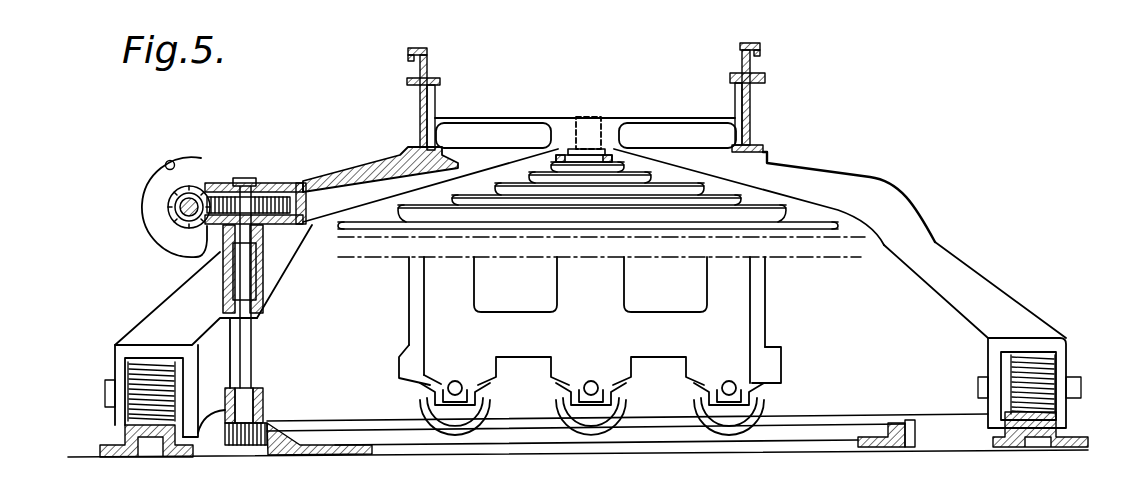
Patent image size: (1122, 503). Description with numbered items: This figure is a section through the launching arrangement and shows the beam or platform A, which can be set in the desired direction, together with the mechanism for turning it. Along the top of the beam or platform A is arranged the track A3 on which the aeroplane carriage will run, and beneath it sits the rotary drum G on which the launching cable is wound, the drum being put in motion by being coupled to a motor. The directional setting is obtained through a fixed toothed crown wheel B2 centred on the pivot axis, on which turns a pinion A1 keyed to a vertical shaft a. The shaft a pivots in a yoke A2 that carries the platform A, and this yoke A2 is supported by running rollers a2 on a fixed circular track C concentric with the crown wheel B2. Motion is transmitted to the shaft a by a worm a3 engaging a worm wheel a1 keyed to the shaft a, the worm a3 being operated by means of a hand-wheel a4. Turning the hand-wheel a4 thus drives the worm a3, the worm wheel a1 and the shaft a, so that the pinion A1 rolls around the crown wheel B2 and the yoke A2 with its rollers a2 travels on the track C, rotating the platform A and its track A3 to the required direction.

The beam or platform A is at (475, 133).
The pinion A1 is at (268, 417).
The yoke A2 is at (177, 303).
The track A3 is at (427, 58).
The fixed toothed crown wheel B2 is at (876, 437).
The fixed circular track C is at (103, 447).
The rotary drum G is at (442, 217).
The vertical shaft a is at (247, 348).
The worm wheel a1 is at (253, 203).
The running rollers a2 is at (140, 386).
The worm a3 is at (190, 196).
The hand-wheel a4 is at (157, 190).